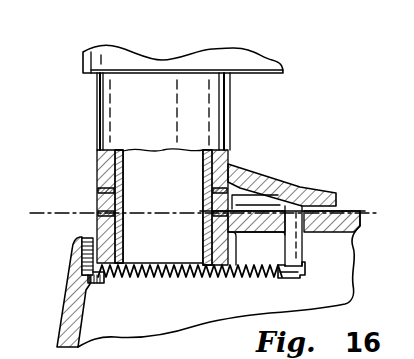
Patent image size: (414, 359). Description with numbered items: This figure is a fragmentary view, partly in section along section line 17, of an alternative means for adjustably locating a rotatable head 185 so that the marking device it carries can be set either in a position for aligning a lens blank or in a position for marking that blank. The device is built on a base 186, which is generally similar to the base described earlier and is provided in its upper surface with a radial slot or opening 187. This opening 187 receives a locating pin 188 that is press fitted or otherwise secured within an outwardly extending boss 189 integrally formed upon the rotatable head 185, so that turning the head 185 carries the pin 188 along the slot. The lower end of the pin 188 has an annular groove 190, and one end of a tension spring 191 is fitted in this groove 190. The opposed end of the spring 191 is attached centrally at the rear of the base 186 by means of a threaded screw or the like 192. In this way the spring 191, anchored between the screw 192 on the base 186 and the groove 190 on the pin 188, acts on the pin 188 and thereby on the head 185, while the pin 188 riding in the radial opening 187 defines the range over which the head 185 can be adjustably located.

The section line 17 is at (25, 228).
The rotatable head 185 is at (129, 61).
The base 186 is at (75, 318).
The radial slot or opening 187 is at (314, 226).
The locating pin 188 is at (285, 252).
The outwardly extending boss 189 is at (270, 187).
The annular groove 190 is at (306, 268).
The tension spring 191 is at (192, 283).
The threaded screw 192 is at (82, 258).